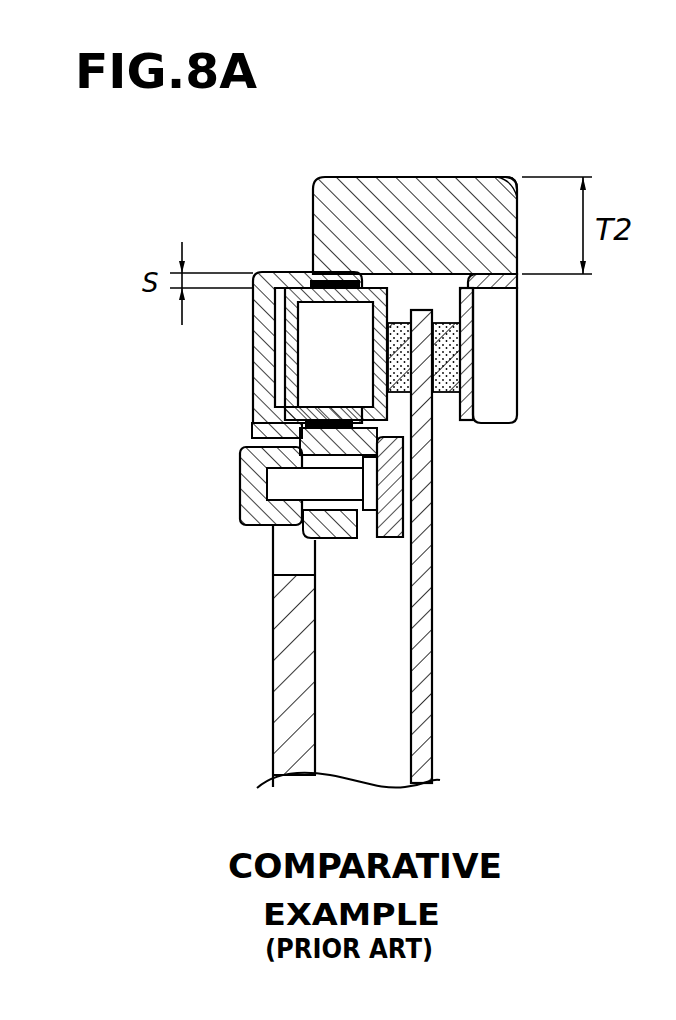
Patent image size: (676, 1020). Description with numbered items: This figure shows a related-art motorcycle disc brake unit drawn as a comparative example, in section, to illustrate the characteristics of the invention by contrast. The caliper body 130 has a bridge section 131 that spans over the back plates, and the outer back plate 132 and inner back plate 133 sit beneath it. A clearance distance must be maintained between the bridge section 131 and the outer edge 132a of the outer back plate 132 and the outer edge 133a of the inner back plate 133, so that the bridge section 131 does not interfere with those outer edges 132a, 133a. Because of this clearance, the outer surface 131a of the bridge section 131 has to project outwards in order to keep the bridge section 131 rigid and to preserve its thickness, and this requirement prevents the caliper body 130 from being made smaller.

The caliper body 130 is at (389, 434).
The bridge section 131 is at (404, 200).
The outer surface 131a is at (472, 180).
The outer back plate 132 is at (350, 393).
The outer edge 132a is at (353, 300).
The inner back plate 133 is at (470, 392).
The outer edge 133a is at (517, 292).